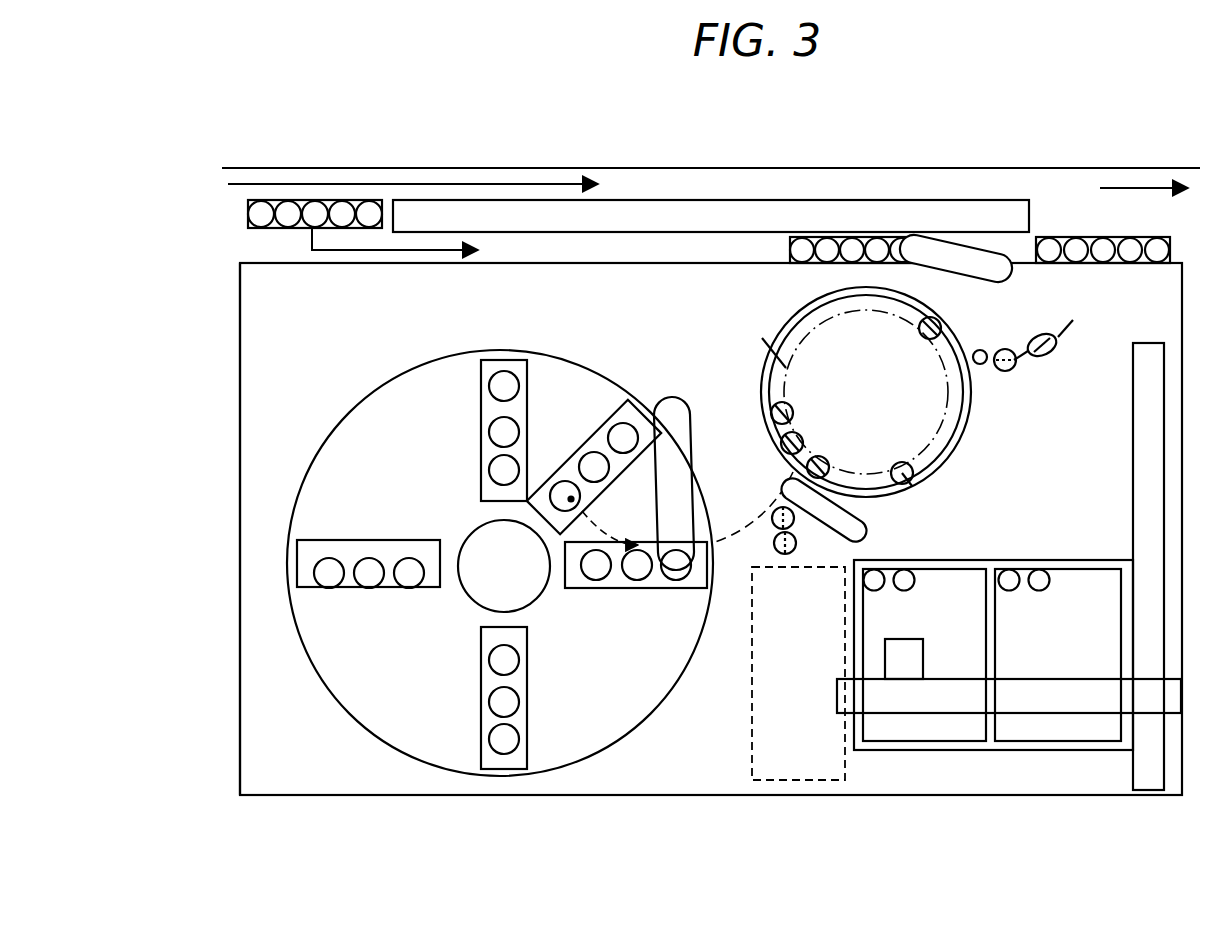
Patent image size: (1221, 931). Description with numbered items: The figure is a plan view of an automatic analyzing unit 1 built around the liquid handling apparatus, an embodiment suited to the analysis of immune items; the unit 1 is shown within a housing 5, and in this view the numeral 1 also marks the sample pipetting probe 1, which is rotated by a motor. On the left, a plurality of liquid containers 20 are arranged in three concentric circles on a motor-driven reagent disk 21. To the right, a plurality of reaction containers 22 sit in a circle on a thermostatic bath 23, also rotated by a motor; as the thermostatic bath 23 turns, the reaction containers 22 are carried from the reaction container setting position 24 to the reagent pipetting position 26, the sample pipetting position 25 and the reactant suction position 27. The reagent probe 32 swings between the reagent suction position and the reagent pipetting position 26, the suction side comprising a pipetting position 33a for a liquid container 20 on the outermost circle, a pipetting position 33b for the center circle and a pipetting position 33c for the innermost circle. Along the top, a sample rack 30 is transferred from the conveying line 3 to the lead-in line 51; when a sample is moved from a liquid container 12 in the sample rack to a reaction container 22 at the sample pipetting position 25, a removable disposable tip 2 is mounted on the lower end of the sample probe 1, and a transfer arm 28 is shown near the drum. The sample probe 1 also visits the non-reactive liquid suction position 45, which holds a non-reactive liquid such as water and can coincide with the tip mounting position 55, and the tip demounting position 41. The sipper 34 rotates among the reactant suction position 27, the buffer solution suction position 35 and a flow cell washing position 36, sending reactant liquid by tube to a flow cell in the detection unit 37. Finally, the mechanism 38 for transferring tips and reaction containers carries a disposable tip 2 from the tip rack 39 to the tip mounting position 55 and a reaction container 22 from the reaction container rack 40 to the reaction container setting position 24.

The sample pipetting probe 1 is at (918, 300).
The disposable tip 2 is at (1009, 588).
The conveyor line 3 is at (500, 176).
The housing 5 is at (236, 602).
The liquid container 12 is at (805, 250).
The liquid container 20 is at (508, 745).
The reagent disk 21 is at (405, 738).
The reaction container 22 is at (772, 422).
The thermostatic bath 23 is at (945, 420).
The reaction container setting position 24 is at (915, 482).
The sample pipetting position 25 is at (920, 334).
The reagent pipetting position 26 is at (800, 434).
The reactant suction position 27 is at (826, 458).
The transfer arm 28 is at (995, 265).
The sample rack 30 is at (302, 205).
The reagent probe 32 is at (682, 400).
The pipetting position 33a is at (664, 588).
The pipetting position 33b is at (637, 544).
The pipetting position 33c is at (567, 490).
The sipper 34 is at (813, 520).
The buffer solution suction position 35 is at (773, 532).
The flow cell washing position 36 is at (776, 556).
The detection unit 37 is at (805, 785).
The mechanism for transferring tips and the reaction containers 38 is at (972, 705).
The tip rack 39 is at (1057, 735).
The reaction container rack 40 is at (893, 735).
The tip demounting position 41 is at (1048, 335).
The non-reactive liquid suction position 45 is at (984, 366).
The lead-in line 51 is at (628, 248).
The tip mounting position 55 is at (1014, 368).